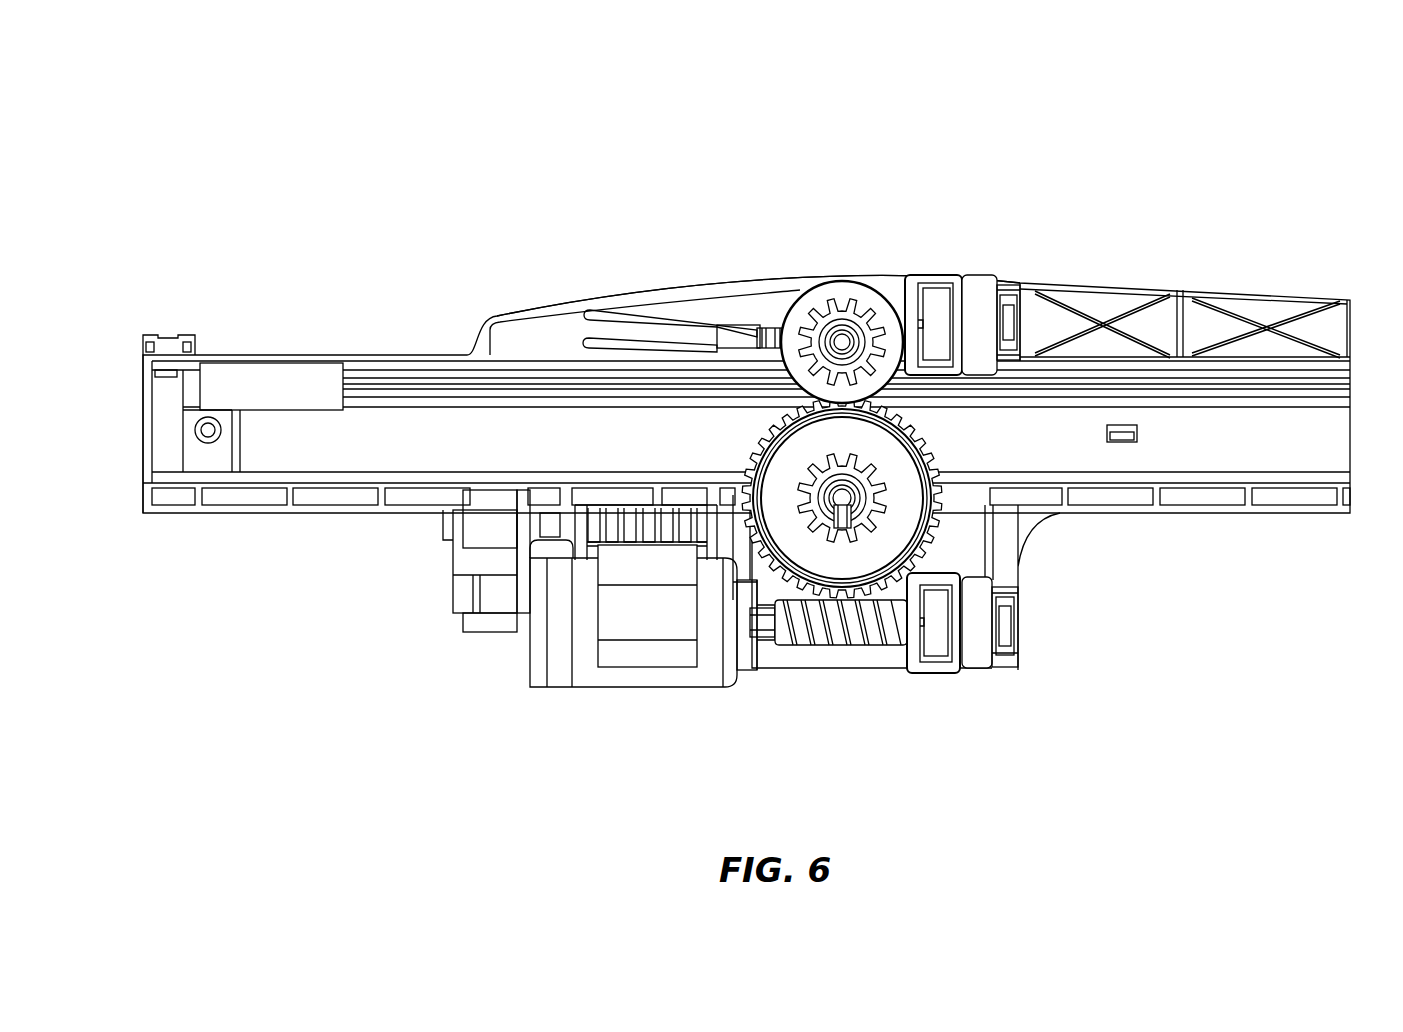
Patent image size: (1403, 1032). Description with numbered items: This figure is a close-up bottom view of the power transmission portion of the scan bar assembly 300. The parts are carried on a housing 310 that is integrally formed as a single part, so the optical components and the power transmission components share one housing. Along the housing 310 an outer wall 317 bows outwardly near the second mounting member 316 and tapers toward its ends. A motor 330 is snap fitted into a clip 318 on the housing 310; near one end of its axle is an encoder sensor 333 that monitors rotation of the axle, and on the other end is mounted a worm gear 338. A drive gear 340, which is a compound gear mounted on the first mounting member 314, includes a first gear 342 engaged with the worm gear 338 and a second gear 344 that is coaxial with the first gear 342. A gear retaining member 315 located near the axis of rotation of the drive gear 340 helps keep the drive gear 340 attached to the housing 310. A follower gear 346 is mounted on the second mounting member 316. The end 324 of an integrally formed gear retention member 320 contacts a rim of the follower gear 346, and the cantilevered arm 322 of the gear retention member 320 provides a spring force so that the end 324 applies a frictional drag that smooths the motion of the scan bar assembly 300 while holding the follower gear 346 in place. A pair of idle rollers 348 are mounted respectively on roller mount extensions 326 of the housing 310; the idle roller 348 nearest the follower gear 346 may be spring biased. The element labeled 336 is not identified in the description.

The scan bar assembly 300 is at (818, 152).
The housing 310 is at (1172, 282).
The first mounting member 314 is at (841, 496).
The gear retaining member 315 is at (845, 522).
The second mounting member 316 is at (845, 338).
The outer wall 317 is at (538, 307).
The clip 318 is at (670, 630).
The gear retention member 320 is at (736, 324).
The cantilevered arm 322 is at (670, 323).
The end 324 is at (784, 328).
The roller mount extensions 326 is at (936, 295).
The motor 330 is at (582, 672).
The encoder sensor 333 is at (460, 595).
The motor casing 336 is at (640, 685).
The worm gear 338 is at (815, 645).
The drive gear 340 is at (951, 452).
The first gear 342 is at (932, 432).
The second gear 344 is at (817, 472).
The follower gear 346 is at (837, 287).
The idle rollers 348 is at (979, 285).